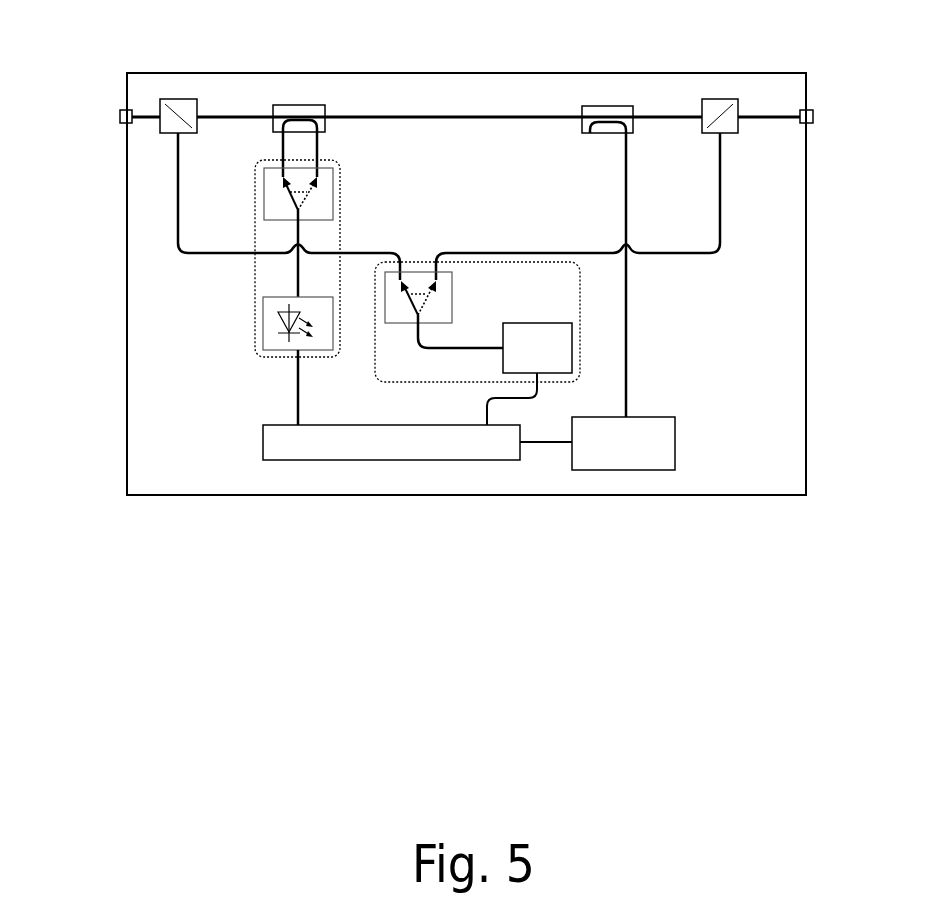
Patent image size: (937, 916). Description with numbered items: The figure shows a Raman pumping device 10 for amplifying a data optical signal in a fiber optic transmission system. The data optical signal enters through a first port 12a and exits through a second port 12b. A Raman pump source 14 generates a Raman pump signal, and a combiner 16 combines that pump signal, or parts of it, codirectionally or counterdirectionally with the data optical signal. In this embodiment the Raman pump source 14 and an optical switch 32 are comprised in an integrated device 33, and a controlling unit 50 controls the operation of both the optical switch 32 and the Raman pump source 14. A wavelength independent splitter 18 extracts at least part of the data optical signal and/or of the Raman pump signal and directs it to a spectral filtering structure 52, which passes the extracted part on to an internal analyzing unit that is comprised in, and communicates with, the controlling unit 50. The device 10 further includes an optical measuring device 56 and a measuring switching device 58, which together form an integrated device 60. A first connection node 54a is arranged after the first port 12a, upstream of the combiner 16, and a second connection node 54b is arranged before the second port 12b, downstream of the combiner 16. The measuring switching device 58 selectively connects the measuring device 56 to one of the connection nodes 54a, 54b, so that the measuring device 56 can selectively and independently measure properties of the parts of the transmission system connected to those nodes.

The Raman pumping device 10 is at (262, 556).
The first port 12a is at (120, 112).
The second port 12b is at (813, 112).
The Raman pump source 14 is at (263, 322).
The combiner 16 is at (298, 105).
The wavelength independent splitter 18 is at (608, 106).
The optical switch 32 is at (264, 193).
The integrated device 33 is at (270, 357).
The controlling unit 50 is at (392, 460).
The spectral filtering structure 52 is at (640, 470).
The first connection node 54a is at (178, 99).
The second connection node 54b is at (720, 99).
The optical measuring device 56 is at (572, 348).
The measuring switching device 58 is at (418, 268).
The integrated device 60 is at (580, 365).